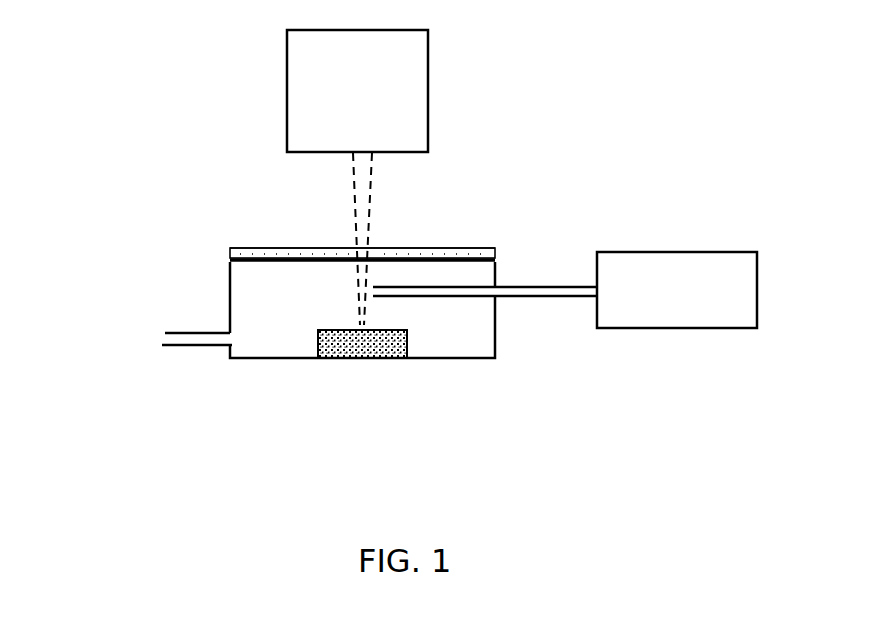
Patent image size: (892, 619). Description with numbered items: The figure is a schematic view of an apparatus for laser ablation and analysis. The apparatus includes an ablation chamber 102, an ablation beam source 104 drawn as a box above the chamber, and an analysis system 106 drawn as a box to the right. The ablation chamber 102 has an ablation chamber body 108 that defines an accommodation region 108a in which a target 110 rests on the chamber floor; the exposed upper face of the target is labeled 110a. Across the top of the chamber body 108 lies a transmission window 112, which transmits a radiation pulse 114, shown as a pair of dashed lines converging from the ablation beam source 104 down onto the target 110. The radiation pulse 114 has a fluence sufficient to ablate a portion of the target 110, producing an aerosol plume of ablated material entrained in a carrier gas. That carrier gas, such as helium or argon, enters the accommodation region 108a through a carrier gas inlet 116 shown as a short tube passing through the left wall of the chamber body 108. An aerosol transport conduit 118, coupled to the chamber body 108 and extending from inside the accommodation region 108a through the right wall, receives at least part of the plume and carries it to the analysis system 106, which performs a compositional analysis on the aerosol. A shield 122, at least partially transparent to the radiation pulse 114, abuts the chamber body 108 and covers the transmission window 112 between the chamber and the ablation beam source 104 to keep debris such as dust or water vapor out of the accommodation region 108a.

The ablation chamber 102 is at (203, 250).
The ablation beam source 104 is at (428, 92).
The analysis system 106 is at (687, 252).
The ablation chamber body 108 is at (232, 284).
The accommodation region 108a is at (243, 313).
The target 110 is at (367, 346).
The sample surface 110a is at (338, 312).
The transmission window 112 is at (343, 248).
The radiation pulse 114 is at (370, 192).
The carrier gas inlet 116 is at (168, 333).
The aerosol transport conduit 118 is at (552, 281).
The shield 122 is at (477, 250).